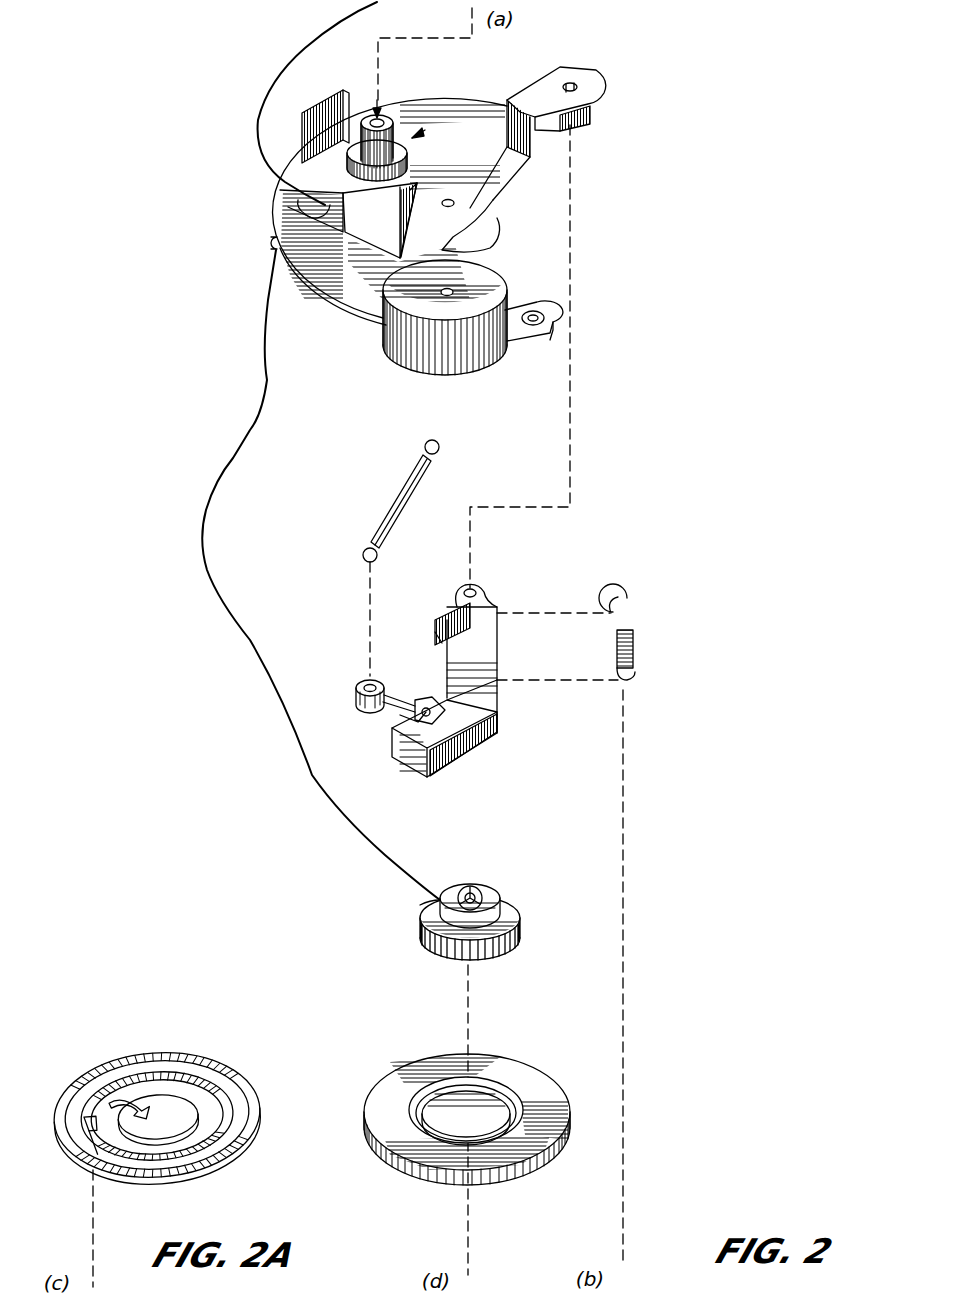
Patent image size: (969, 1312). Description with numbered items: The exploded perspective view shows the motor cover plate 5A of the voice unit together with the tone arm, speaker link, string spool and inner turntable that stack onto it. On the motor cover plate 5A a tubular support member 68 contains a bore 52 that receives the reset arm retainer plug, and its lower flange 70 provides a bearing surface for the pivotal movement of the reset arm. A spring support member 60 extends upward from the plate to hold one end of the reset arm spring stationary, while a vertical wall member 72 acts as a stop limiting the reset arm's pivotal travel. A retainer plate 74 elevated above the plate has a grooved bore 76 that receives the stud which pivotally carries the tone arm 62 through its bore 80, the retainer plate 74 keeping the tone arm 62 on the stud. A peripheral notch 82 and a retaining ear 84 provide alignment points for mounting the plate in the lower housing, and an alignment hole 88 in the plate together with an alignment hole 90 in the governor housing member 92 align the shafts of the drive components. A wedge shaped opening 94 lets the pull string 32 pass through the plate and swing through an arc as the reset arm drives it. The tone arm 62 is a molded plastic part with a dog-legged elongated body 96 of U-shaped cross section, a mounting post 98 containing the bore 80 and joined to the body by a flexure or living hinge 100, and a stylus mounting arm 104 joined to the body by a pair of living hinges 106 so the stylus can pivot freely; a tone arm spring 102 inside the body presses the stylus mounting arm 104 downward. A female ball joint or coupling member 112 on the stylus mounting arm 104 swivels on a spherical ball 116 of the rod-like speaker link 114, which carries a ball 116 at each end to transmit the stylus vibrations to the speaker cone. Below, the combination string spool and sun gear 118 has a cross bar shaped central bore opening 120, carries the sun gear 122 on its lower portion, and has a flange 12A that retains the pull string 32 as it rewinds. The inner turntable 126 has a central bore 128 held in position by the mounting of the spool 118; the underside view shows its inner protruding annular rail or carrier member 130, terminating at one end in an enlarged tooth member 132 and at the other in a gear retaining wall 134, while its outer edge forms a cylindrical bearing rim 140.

In FIG. 2, the motor cover plate 5A is at (268, 218).
In FIG. 2, the pull string 32 is at (233, 458).
In FIG. 2, the bore 52 is at (380, 108).
In FIG. 2, the spring support member 60 is at (333, 105).
In FIG. 2, the tone arm 62 is at (403, 768).
In FIG. 2, the tubular support member 68 is at (425, 130).
In FIG. 2, the lower flange 70 is at (410, 155).
In FIG. 2, the vertical wall member 72 is at (360, 232).
In FIG. 2, the retainer plate 74 is at (600, 87).
In FIG. 2, the grooved bore 76 is at (570, 83).
In FIG. 2, the bore 80 is at (474, 589).
In FIG. 2, the peripheral notch 82 is at (273, 243).
In FIG. 2, the retaining ear 84 is at (557, 327).
In FIG. 2, the alignment hole 88 is at (455, 203).
In FIG. 2, the alignment hole 90 is at (452, 292).
In FIG. 2, the governor housing member 92 is at (462, 370).
In FIG. 2, the wedge shaped opening 94 is at (298, 200).
In FIG. 2, the elongated body 96 is at (497, 668).
In FIG. 2, the mounting post 98 is at (465, 590).
In FIG. 2, the living hinge 100 is at (492, 604).
In FIG. 2, the tone arm spring 102 is at (633, 643).
In FIG. 2, the stylus mounting arm 104 is at (400, 712).
In FIG. 2, the living hinges 106 is at (427, 700).
In FIG. 2, the female ball joint 112 is at (356, 702).
In FIG. 2, the speaker link 114 is at (392, 487).
In FIG. 2, the spherical ball 116 is at (426, 442).
In FIG. 2, the combination string spool and sun gear 118 is at (520, 921).
In FIG. 2, the central bore opening 120 is at (470, 885).
In FIG. 2, the sun gear 122 is at (455, 960).
In FIG. 2, the flange 12A is at (420, 905).
In FIG. 2, the inner turntable 126 is at (560, 1155).
In FIG. 2, the central cavity or bore 128 is at (490, 1105).
In FIG. 2A, the annular rail or carrier member 130 is at (224, 1097).
In FIG. 2A, the enlarged tooth member 132 is at (88, 1118).
In FIG. 2A, the gear retaining wall 134 is at (118, 1103).
In FIG. 2A, the cylindrical bearing rim 140 is at (188, 1062).